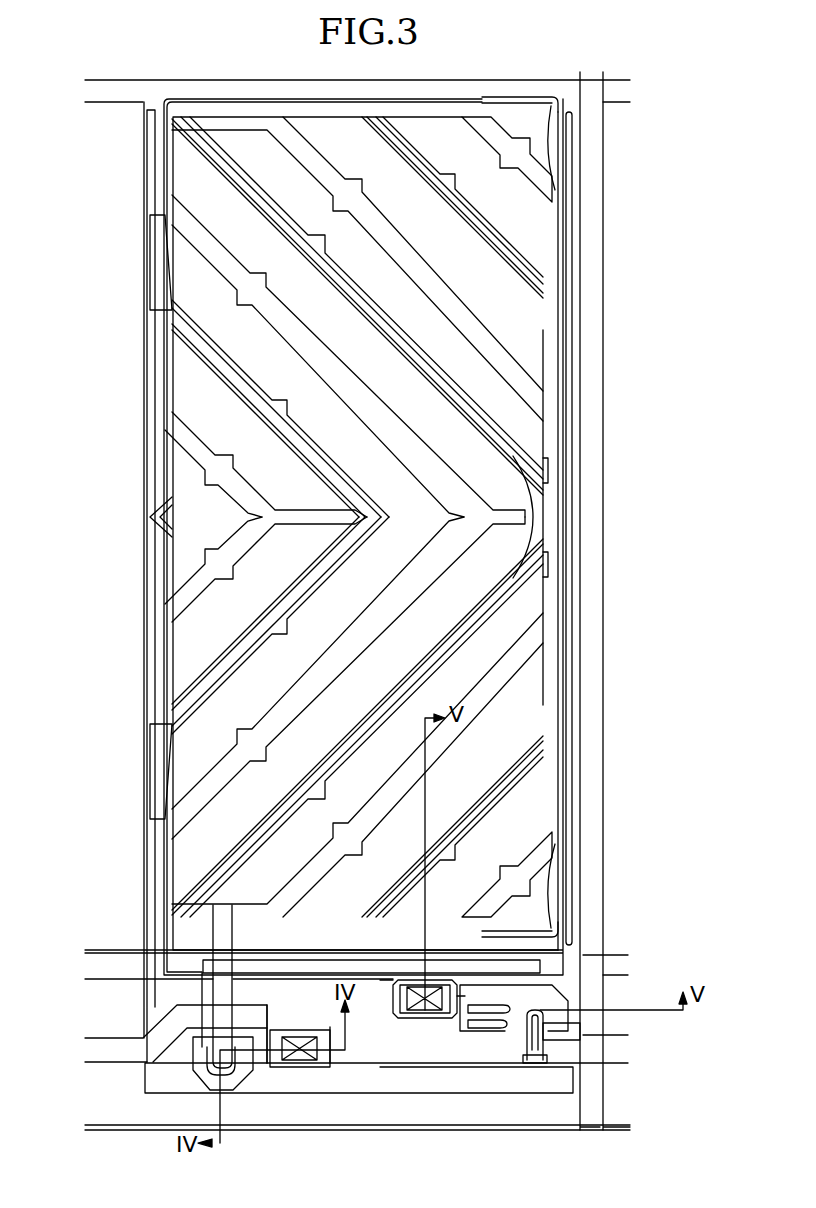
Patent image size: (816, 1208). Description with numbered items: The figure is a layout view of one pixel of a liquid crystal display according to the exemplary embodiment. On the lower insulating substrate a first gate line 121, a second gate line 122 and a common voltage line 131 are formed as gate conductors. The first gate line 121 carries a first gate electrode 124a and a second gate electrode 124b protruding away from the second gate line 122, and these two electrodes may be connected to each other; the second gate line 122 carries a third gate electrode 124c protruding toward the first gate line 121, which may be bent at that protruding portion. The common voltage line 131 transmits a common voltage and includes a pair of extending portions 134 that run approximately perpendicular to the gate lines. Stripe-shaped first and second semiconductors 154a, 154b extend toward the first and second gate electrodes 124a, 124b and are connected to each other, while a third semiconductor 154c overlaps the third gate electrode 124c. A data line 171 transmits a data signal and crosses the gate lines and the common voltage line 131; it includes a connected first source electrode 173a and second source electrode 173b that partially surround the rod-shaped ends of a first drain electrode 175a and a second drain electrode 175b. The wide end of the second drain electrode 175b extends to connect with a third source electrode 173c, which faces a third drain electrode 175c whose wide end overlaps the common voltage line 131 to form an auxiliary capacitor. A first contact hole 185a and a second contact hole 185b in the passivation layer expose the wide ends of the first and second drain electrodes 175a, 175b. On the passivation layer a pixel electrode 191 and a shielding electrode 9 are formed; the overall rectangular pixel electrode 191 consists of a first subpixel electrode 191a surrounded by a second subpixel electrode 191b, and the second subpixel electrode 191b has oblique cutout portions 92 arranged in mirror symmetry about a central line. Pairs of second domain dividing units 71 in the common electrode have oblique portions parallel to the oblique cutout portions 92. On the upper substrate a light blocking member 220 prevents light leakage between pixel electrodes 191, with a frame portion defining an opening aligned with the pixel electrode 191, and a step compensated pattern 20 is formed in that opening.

The shielding electrode 9 is at (440, 1095).
The step compensated pattern 20 is at (555, 283).
The second domain dividing unit 71 is at (553, 98).
The oblique cutout portion 92 is at (212, 268).
The first gate line 121 is at (100, 1046).
The second gate line 122 is at (100, 1112).
The first gate electrode 124a is at (560, 990).
The second gate electrode 124b is at (298, 1034).
The third gate electrode 124c is at (190, 1075).
The common voltage line 131 is at (100, 960).
The extending portion 134 is at (165, 838).
The first semiconductor 154a is at (512, 1012).
The second semiconductor 154b is at (560, 1030).
The third semiconductor 154c is at (247, 1090).
The data line 171 is at (600, 517).
The first source electrode 173a is at (490, 1018).
The second source electrode 173b is at (565, 1003).
The third source electrode 173c is at (200, 1090).
The first drain electrode 175a is at (470, 1013).
The second drain electrode 175b is at (583, 1127).
The third drain electrode 175c is at (213, 1017).
The first contact hole 185a is at (410, 1012).
The second contact hole 185b is at (297, 1067).
The pixel electrode 191 is at (676, 400).
The first subpixel electrode 191a is at (563, 453).
The second subpixel electrode 191b is at (560, 430).
The light blocking member 220 is at (165, 632).